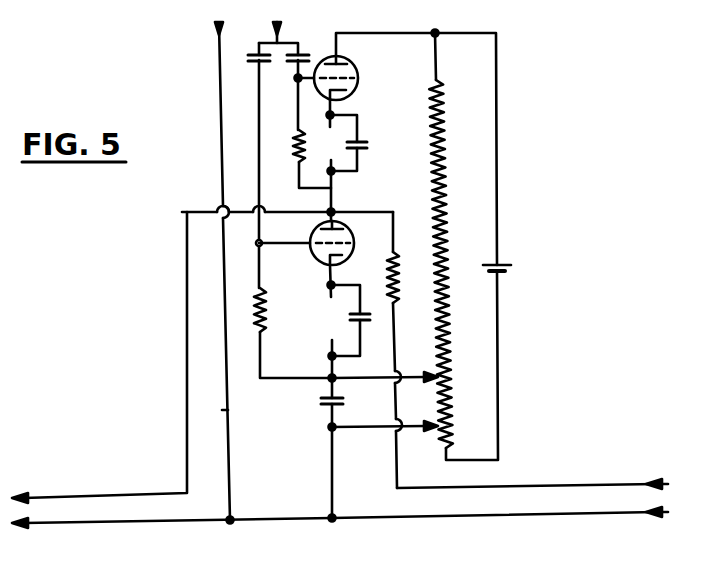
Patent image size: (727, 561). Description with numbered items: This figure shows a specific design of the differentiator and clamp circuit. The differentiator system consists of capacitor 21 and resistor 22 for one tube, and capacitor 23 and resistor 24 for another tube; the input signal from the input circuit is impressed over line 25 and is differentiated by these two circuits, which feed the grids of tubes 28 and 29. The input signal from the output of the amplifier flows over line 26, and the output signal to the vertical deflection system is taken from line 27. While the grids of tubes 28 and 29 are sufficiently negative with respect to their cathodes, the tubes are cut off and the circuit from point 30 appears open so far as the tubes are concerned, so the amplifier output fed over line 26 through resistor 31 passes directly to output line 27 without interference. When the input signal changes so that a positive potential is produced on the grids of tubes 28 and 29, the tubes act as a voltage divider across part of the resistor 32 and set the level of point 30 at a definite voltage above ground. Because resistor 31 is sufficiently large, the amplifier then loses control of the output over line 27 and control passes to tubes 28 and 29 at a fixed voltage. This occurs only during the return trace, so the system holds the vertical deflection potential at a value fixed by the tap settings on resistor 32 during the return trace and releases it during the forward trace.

The capacitor 21 is at (305, 50).
The resistor 22 is at (293, 140).
The capacitor 23 is at (248, 64).
The resistor 24 is at (268, 306).
The line 25 is at (274, 27).
The line 26 is at (572, 488).
The line 27 is at (101, 496).
The tube 28 is at (357, 66).
The tube 29 is at (352, 233).
The point 30 is at (338, 207).
The resistor 31 is at (399, 262).
The resistor 32 is at (446, 160).